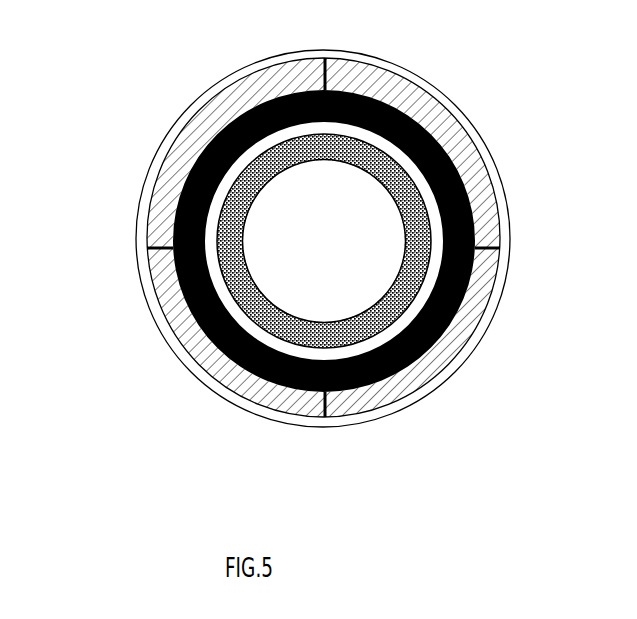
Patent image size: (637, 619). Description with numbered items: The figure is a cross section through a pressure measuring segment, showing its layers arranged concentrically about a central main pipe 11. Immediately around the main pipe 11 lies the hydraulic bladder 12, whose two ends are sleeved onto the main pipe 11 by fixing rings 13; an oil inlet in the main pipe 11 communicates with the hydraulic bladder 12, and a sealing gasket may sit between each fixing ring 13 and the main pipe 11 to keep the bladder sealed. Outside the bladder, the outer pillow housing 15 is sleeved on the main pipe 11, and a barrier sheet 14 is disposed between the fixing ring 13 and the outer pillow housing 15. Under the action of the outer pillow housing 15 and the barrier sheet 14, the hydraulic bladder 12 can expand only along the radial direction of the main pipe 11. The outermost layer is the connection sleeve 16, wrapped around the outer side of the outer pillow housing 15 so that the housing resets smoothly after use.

The main pipe 11 is at (175, 337).
The hydraulic bladder 12 is at (215, 215).
The fixing ring 13 is at (230, 298).
The barrier sheet 14 is at (295, 413).
The outer pillow housing 15 is at (217, 122).
The connection sleeve 16 is at (258, 65).